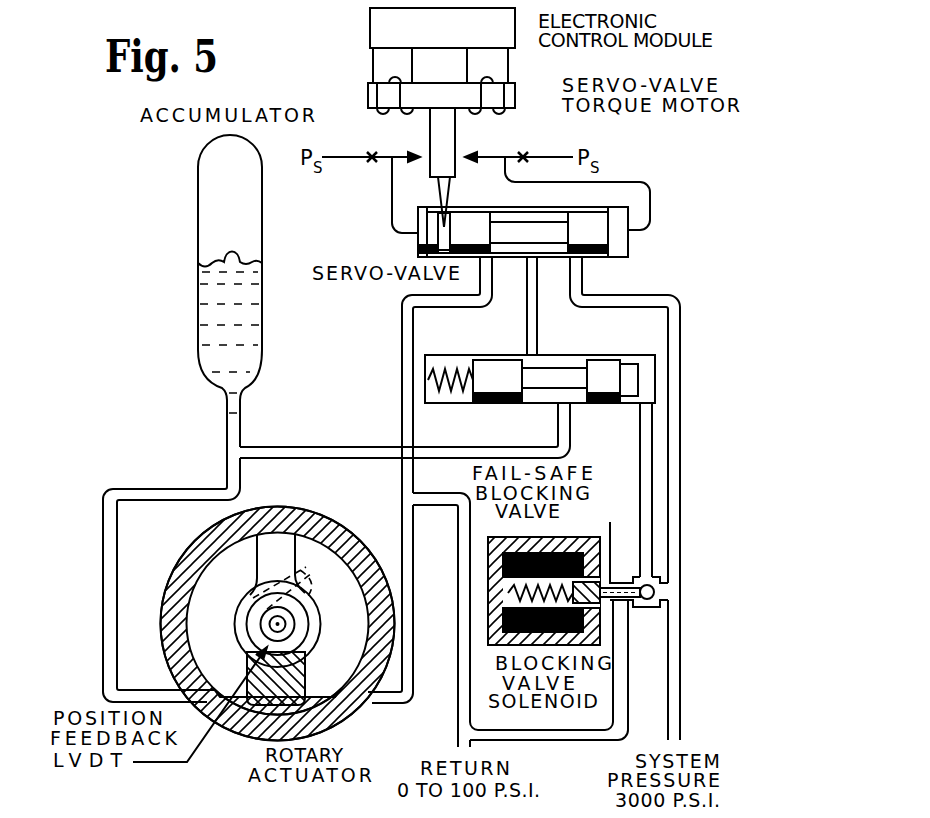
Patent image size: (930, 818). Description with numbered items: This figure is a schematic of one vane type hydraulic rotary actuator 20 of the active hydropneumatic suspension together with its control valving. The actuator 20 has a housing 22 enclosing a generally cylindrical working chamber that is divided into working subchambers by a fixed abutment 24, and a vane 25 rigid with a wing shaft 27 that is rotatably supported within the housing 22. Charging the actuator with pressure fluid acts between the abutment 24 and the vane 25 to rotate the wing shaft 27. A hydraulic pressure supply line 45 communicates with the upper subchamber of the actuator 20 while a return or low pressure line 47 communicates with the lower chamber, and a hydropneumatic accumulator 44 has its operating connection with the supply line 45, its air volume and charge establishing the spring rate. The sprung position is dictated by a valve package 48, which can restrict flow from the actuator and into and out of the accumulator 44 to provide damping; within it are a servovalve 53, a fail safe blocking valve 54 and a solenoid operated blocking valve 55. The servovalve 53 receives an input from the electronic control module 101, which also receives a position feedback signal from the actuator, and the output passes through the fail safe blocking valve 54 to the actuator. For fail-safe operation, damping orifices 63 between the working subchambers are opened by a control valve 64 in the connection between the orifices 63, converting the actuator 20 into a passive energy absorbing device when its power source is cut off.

The electronic control module 101 is at (536, 22).
The vane type hydraulic rotary actuator 20 is at (148, 633).
The housing 22 is at (185, 555).
The fixed abutment 24 is at (287, 688).
The vane 25 is at (257, 560).
The wing shaft 27 is at (296, 630).
The hydropneumatic accumulator 44 is at (198, 345).
The hydraulic pressure supply line 45 is at (103, 568).
The return or low pressure line 47 is at (413, 508).
The valve package 48 is at (689, 195).
The servovalve 53 is at (628, 245).
The fail safe blocking valve 54 is at (645, 355).
The solenoid operated blocking valve 55 is at (657, 585).
The damping orifices 63 is at (294, 580).
The control valve 64 is at (267, 625).